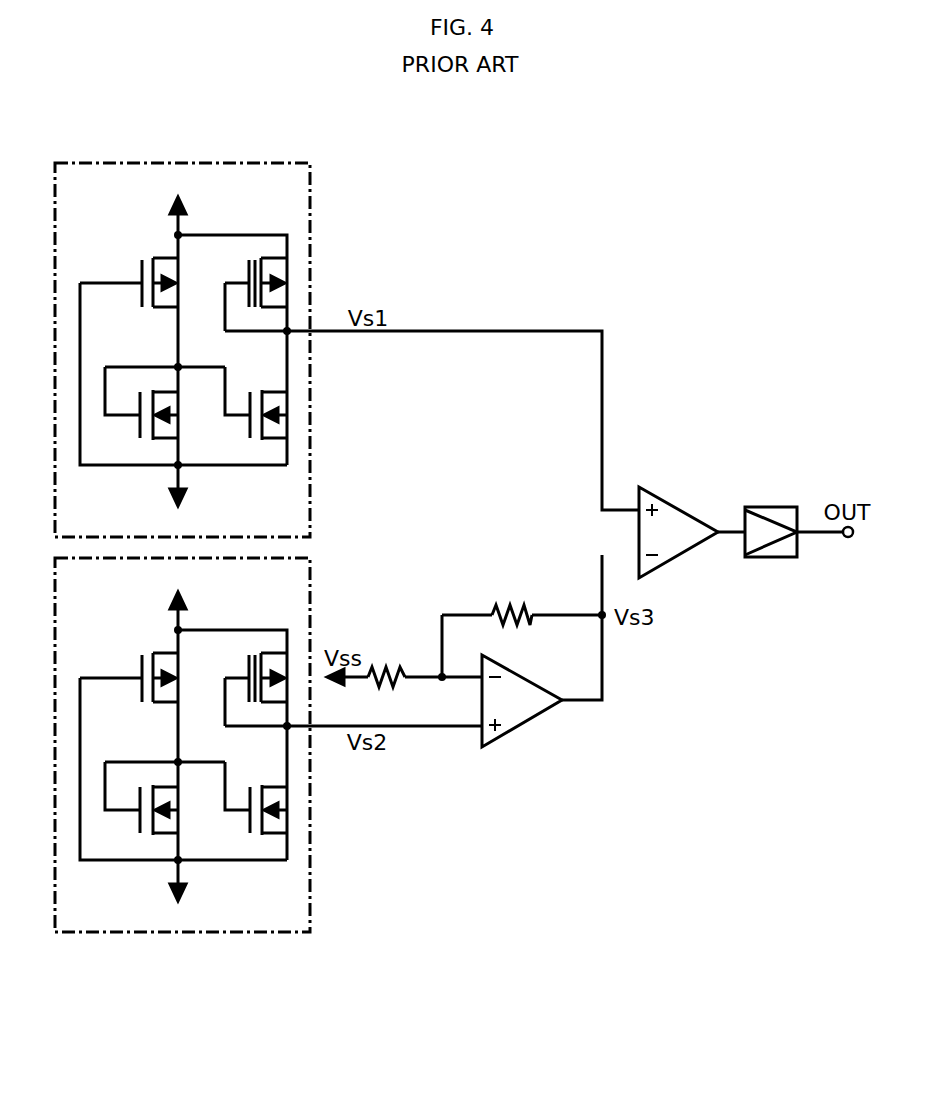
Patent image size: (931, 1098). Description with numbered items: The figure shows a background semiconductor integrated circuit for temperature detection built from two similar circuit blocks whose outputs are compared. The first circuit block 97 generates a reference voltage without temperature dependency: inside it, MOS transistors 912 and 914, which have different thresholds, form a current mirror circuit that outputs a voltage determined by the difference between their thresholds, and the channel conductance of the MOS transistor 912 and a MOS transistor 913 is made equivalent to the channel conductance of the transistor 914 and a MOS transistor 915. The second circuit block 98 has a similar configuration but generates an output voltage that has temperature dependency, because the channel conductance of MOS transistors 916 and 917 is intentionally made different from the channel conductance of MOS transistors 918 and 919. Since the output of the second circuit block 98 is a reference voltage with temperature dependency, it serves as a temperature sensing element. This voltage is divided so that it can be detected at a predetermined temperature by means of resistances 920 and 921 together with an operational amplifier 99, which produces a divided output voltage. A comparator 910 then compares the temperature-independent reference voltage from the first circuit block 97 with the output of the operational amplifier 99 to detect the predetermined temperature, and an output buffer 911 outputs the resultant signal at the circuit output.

The first circuit block 97 is at (311, 193).
The second circuit block 98 is at (213, 745).
The operational amplifier 99 is at (532, 670).
The comparator 910 is at (676, 498).
The output buffer 911 is at (778, 505).
The MOS transistor 912 is at (150, 250).
The MOS transistor 913 is at (126, 424).
The MOS transistor 914 is at (254, 250).
The MOS transistor 915 is at (267, 380).
The MOS transistor 916 is at (139, 647).
The MOS transistor 917 is at (132, 820).
The MOS transistor 918 is at (237, 667).
The MOS transistor 919 is at (254, 781).
The resistance 920 is at (391, 653).
The resistance 921 is at (514, 592).